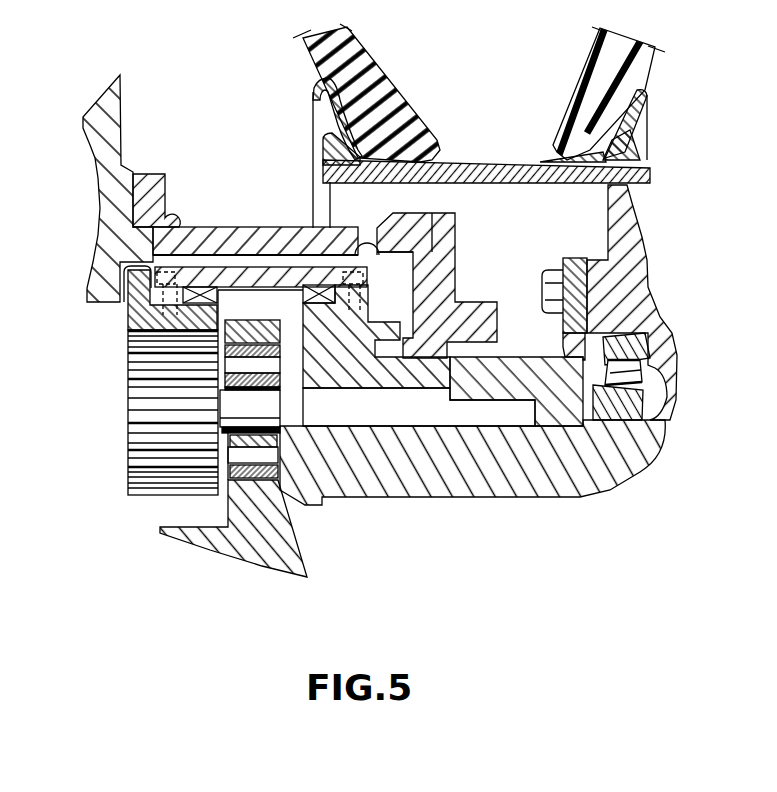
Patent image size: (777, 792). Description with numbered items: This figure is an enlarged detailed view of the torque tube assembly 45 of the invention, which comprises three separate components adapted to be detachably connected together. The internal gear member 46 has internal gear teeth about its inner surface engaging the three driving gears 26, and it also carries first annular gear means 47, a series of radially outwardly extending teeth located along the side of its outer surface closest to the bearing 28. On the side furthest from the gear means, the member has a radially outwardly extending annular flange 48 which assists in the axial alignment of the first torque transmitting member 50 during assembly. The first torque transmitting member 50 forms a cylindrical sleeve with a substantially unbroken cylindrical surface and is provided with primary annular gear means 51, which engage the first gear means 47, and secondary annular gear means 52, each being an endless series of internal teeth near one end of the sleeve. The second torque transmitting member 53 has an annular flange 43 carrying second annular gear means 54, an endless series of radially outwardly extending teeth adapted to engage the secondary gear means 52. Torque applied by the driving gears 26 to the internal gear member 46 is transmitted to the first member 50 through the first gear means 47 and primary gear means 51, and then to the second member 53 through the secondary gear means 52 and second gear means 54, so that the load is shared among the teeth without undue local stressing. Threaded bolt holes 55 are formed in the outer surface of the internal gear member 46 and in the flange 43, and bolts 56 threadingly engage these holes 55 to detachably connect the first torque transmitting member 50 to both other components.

The driving gears 26 is at (141, 396).
The bearing 28 is at (300, 507).
The annular flange 43 is at (308, 362).
The torque tube assembly 45 is at (97, 246).
The internal gear member 46 is at (182, 352).
The first annular gear means 47 is at (215, 314).
The annular flange 48 is at (98, 212).
The first torque transmitting member 50 is at (253, 267).
The primary annular gear means 51 is at (215, 267).
The secondary annular gear means 52 is at (358, 236).
The second torque transmitting member 53 is at (534, 368).
The second annular gear means 54 is at (290, 330).
The bolt holes 55 is at (138, 278).
The bolts 56 is at (163, 313).